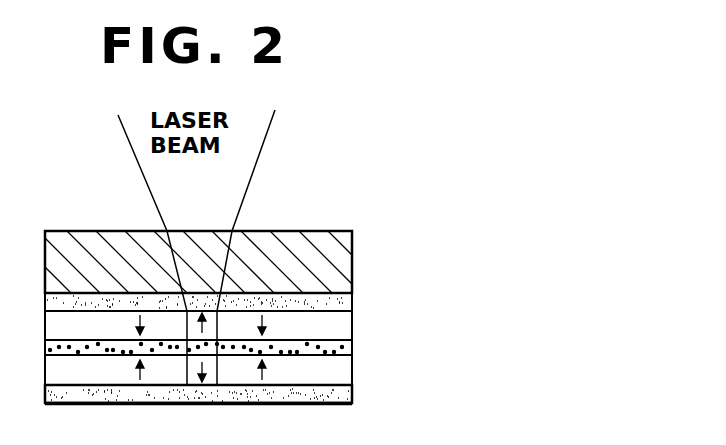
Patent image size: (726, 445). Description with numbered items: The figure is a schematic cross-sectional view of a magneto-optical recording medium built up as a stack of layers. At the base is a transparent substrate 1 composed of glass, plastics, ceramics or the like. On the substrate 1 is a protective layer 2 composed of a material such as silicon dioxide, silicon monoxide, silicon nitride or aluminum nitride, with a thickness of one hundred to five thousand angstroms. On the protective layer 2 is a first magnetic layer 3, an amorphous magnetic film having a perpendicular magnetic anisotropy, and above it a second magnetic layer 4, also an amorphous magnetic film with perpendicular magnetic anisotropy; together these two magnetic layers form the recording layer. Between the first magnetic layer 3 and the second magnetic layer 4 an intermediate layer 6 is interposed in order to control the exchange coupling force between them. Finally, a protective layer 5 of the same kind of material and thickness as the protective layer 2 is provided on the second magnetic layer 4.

The transparent substrate 1 is at (343, 257).
The protective layer 2 is at (345, 298).
The first magnetic layer 3 is at (345, 320).
The second magnetic layer 4 is at (345, 368).
The protective layer 5 is at (345, 390).
The intermediate layer 6 is at (350, 347).